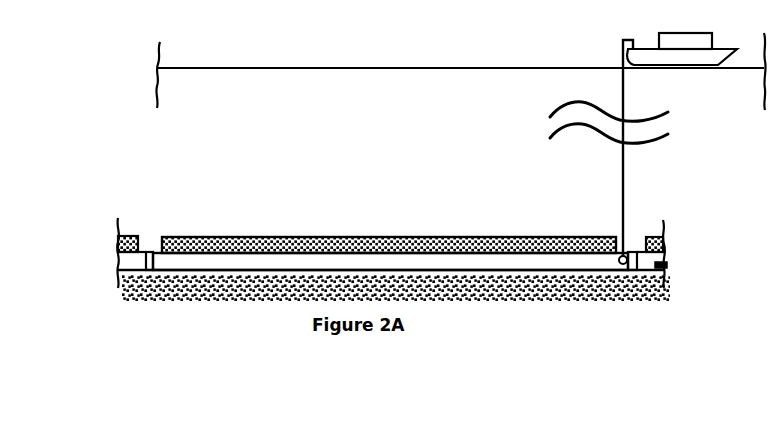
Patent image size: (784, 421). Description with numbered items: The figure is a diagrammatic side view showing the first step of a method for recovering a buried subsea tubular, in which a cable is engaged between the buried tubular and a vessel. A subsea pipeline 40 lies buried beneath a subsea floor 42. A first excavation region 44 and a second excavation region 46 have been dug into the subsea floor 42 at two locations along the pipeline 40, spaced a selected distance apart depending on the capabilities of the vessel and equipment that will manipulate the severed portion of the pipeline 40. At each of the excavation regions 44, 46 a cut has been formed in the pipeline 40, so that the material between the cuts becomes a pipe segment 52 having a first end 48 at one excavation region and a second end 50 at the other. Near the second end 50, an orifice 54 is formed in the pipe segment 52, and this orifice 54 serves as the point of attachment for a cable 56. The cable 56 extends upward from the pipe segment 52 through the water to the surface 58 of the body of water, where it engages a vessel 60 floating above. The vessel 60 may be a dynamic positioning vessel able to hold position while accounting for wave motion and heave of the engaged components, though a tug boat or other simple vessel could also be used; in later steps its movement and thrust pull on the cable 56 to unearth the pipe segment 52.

The subsea pipeline 40 is at (665, 276).
The subsea floor 42 is at (420, 238).
The first excavation region 44 is at (147, 232).
The second excavation region 46 is at (639, 236).
The first end 48 is at (152, 268).
The second end 50 is at (631, 266).
The pipe segment 52 is at (310, 259).
The orifice 54 is at (619, 257).
The cable 56 is at (620, 195).
The surface 58 is at (517, 68).
The vessel 60 is at (662, 57).